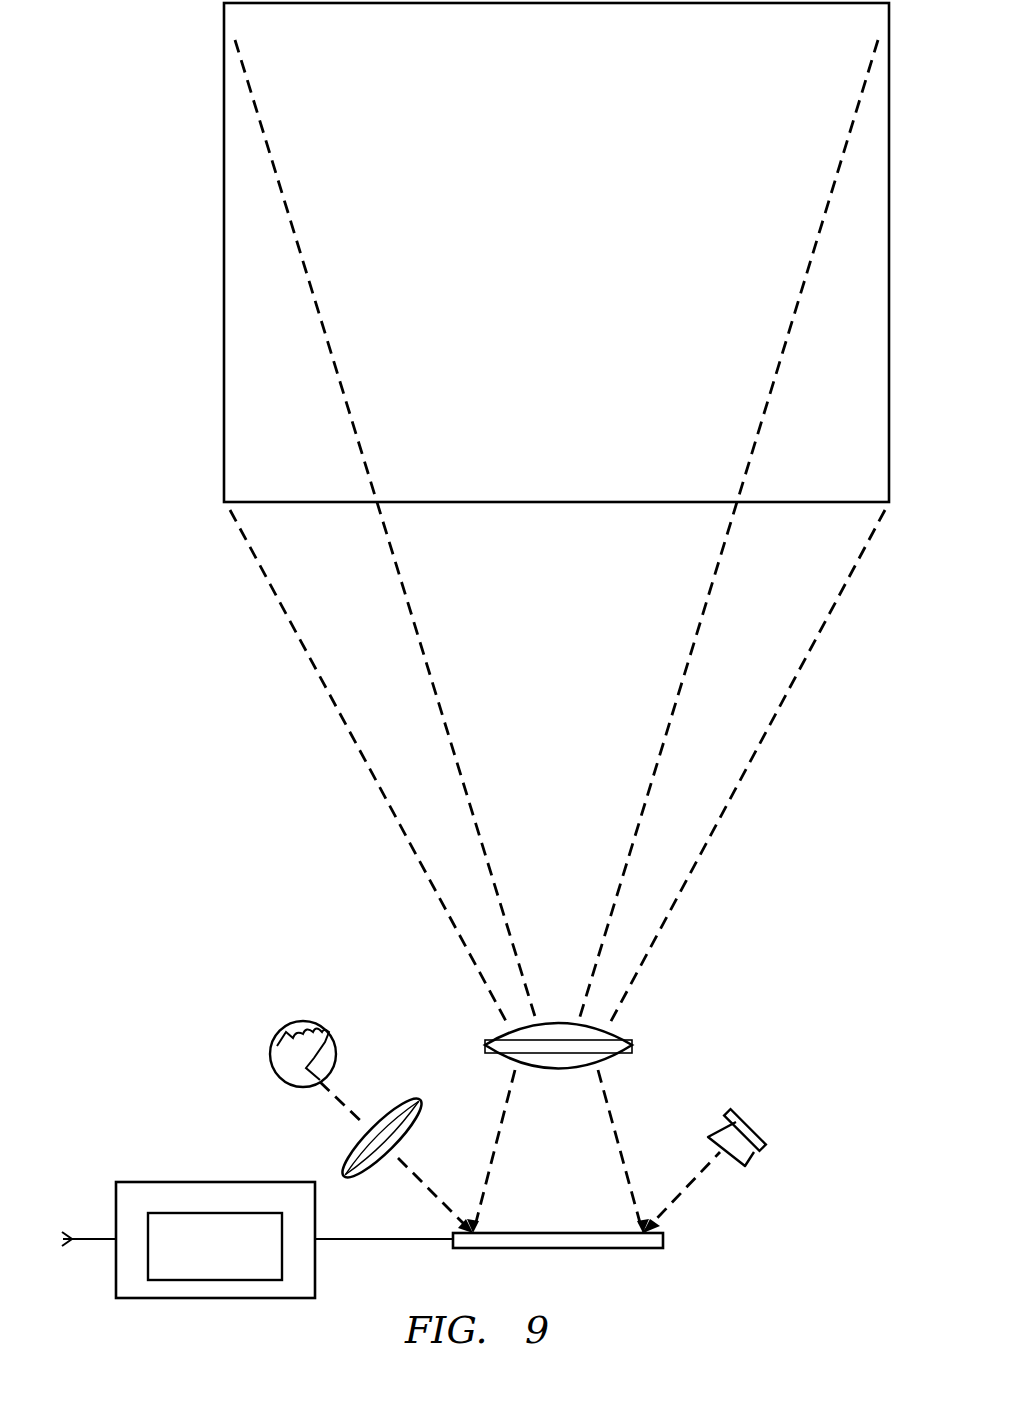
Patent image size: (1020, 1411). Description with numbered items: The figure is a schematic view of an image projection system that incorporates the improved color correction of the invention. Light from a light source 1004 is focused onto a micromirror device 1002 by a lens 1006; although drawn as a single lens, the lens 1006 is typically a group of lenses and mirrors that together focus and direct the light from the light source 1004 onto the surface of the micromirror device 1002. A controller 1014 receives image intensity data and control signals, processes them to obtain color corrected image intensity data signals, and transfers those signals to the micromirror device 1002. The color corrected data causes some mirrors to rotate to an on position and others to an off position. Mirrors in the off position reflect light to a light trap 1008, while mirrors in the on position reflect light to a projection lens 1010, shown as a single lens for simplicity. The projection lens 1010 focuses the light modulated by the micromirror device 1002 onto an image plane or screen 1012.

The micromirror device 1002 is at (663, 1240).
The light source 1004 is at (281, 1026).
The lens 1006 is at (397, 1102).
The light trap 1008 is at (773, 1097).
The projection lens 1010 is at (632, 1045).
The screen 1012 is at (233, 270).
The controller 1014 is at (186, 1182).